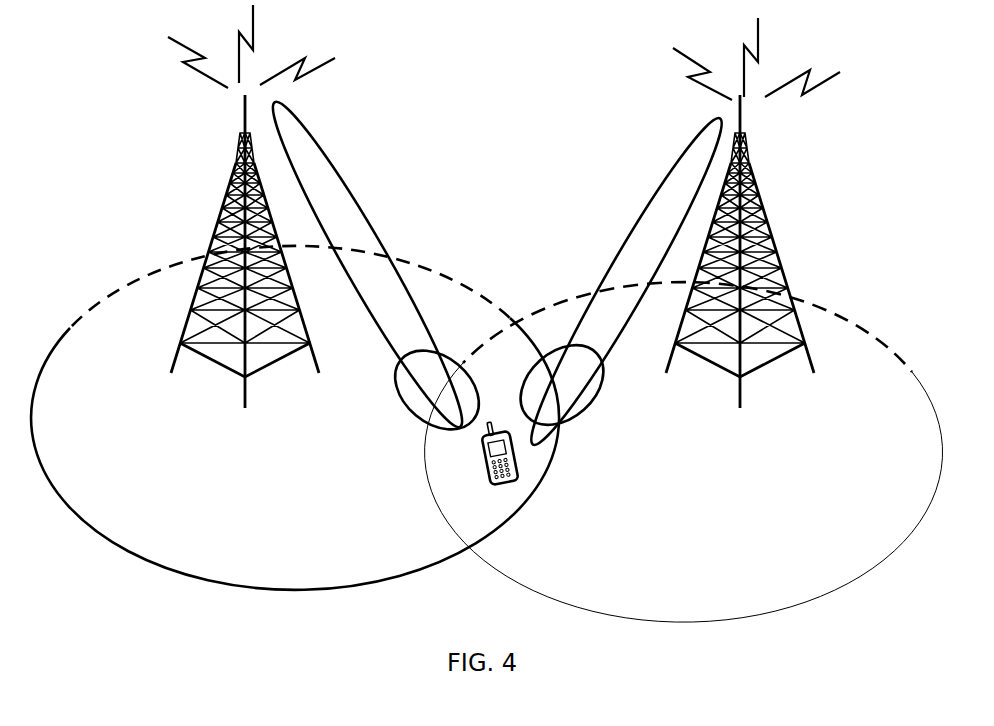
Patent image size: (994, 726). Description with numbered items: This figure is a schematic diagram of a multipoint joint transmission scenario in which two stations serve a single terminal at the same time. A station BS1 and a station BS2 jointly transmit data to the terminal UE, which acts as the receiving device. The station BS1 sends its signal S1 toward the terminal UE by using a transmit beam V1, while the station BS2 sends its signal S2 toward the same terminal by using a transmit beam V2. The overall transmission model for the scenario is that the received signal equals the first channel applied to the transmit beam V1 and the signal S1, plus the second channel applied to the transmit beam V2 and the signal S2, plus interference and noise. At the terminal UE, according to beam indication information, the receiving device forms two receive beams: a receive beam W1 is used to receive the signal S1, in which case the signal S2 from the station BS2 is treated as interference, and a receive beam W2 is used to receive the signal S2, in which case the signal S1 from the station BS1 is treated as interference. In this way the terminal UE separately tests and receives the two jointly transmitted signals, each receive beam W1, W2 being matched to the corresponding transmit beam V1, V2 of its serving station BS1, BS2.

The station BS1 is at (251, 206).
The station BS2 is at (753, 213).
The signal S1 is at (295, 417).
The signal S2 is at (684, 434).
The transmit beam V1 is at (368, 264).
The transmit beam V2 is at (626, 281).
The receive beam W1 is at (427, 390).
The receive beam W2 is at (574, 385).
The terminal UE is at (478, 452).